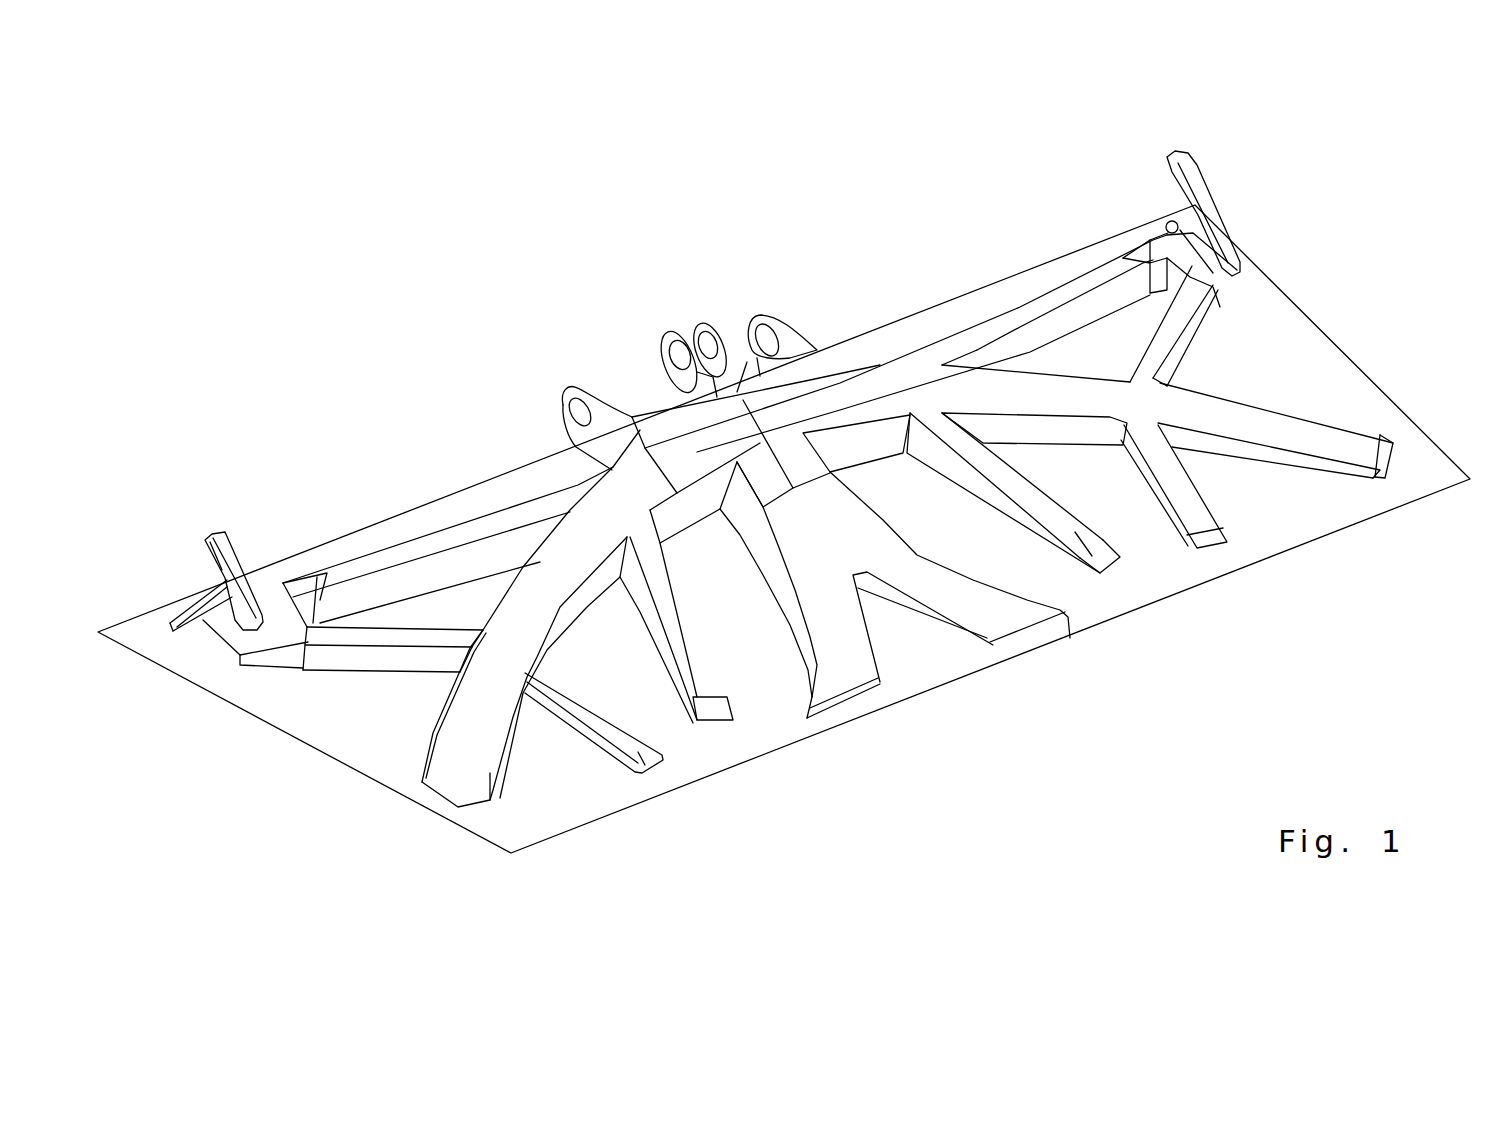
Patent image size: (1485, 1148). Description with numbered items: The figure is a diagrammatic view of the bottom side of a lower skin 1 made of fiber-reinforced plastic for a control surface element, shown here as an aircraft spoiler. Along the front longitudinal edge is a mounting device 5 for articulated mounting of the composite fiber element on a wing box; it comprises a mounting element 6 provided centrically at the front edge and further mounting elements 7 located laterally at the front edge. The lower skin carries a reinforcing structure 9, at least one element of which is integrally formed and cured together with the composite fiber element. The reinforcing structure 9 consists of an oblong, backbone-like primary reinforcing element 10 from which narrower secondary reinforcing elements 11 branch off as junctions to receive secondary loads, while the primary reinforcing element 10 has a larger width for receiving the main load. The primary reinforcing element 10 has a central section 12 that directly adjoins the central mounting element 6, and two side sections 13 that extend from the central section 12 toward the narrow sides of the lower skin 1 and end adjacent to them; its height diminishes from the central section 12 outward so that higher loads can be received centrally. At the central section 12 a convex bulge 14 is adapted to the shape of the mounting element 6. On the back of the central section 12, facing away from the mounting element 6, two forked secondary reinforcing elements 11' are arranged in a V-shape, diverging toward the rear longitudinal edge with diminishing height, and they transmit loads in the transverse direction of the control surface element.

The lower skin 1 is at (784, 529).
The mounting device 5 is at (906, 325).
The mounting element 6 is at (689, 383).
The further mounting elements 7 is at (705, 395).
The reinforcing structure 9 is at (542, 780).
The primary reinforcing element 10 is at (651, 586).
The secondary reinforcing elements 11 is at (772, 557).
The forked secondary reinforcing elements 11' is at (950, 638).
The central section 12 is at (856, 360).
The side sections 13 is at (848, 527).
The convex bulge 14 is at (756, 377).